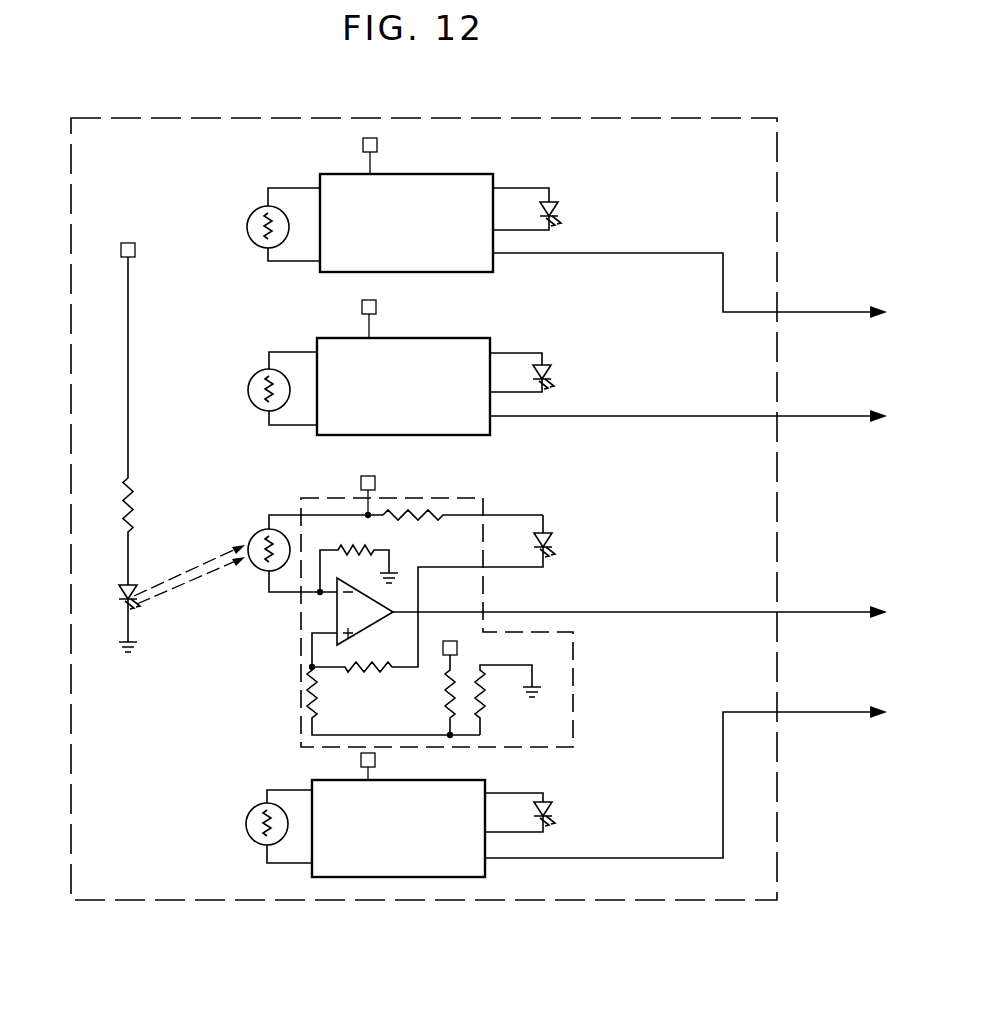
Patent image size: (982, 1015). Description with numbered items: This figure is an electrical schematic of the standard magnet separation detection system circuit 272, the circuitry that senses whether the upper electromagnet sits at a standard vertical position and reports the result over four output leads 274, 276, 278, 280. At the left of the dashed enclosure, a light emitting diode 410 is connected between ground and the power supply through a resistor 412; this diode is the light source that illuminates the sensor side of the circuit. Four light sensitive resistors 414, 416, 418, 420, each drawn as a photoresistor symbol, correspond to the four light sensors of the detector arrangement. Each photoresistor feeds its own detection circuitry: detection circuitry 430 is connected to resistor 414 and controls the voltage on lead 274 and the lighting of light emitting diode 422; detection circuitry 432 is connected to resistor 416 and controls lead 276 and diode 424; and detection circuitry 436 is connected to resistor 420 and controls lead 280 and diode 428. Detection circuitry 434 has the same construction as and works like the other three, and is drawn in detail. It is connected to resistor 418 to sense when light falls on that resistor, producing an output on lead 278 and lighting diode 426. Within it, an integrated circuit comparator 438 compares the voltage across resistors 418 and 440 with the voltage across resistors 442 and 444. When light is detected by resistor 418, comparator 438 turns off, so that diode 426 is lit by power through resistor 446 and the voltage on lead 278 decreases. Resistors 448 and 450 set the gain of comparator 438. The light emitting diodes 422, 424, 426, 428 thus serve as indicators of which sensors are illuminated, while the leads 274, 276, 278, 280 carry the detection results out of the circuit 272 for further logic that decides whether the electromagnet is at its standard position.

The standard magnet separation detection system circuit 272 is at (362, 900).
The lead 274 is at (793, 312).
The lead 276 is at (833, 418).
The lead 278 is at (812, 613).
The lead 280 is at (825, 712).
The light emitting diode 410 is at (133, 586).
The resistor 412 is at (130, 478).
The light sensitive resistor 414 is at (250, 212).
The light sensitive resistor 416 is at (251, 378).
The light sensitive resistor 418 is at (252, 570).
The light sensitive resistor 420 is at (246, 812).
The light emitting diode 422 is at (551, 200).
The light emitting diode 424 is at (552, 366).
The light emitting diode 426 is at (557, 541).
The light emitting diode 428 is at (555, 808).
The detection circuitry 430 is at (418, 272).
The detection circuitry 432 is at (423, 435).
The detection circuitry 434 is at (298, 624).
The detection circuitry 436 is at (333, 780).
The integrated circuit comparator 438 is at (370, 618).
The resistor 440 is at (362, 544).
The resistor 442 is at (447, 690).
The resistor 444 is at (490, 688).
The resistor 446 is at (413, 520).
The resistor 448 is at (355, 670).
The resistor 450 is at (318, 683).